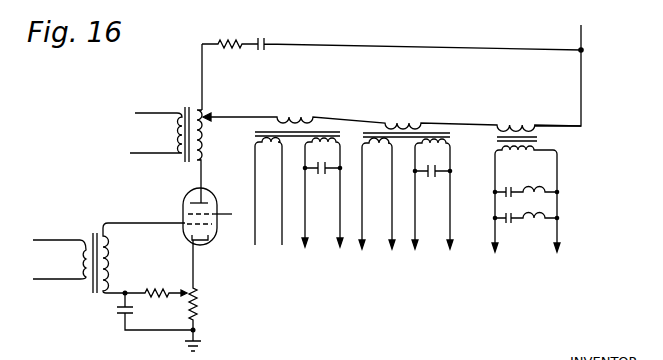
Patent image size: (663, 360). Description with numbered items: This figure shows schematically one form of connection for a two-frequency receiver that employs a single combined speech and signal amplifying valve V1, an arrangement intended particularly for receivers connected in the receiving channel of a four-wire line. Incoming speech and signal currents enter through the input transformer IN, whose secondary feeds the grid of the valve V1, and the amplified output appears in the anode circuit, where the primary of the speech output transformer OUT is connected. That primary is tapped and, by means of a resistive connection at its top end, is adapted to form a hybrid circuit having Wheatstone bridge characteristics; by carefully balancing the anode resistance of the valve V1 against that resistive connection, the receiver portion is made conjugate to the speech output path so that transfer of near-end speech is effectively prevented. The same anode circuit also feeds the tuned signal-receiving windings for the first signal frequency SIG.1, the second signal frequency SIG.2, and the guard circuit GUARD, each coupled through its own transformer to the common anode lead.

The amplifier valve (vacuum tube) V1 is at (209, 215).
The output transformer OUT is at (165, 155).
The input transformer IN is at (109, 258).
The signal 2 output transformer SIG.2 is at (299, 205).
The signal 1 output transformer SIG.1 is at (406, 206).
The guard output transformer GUARD is at (526, 208).